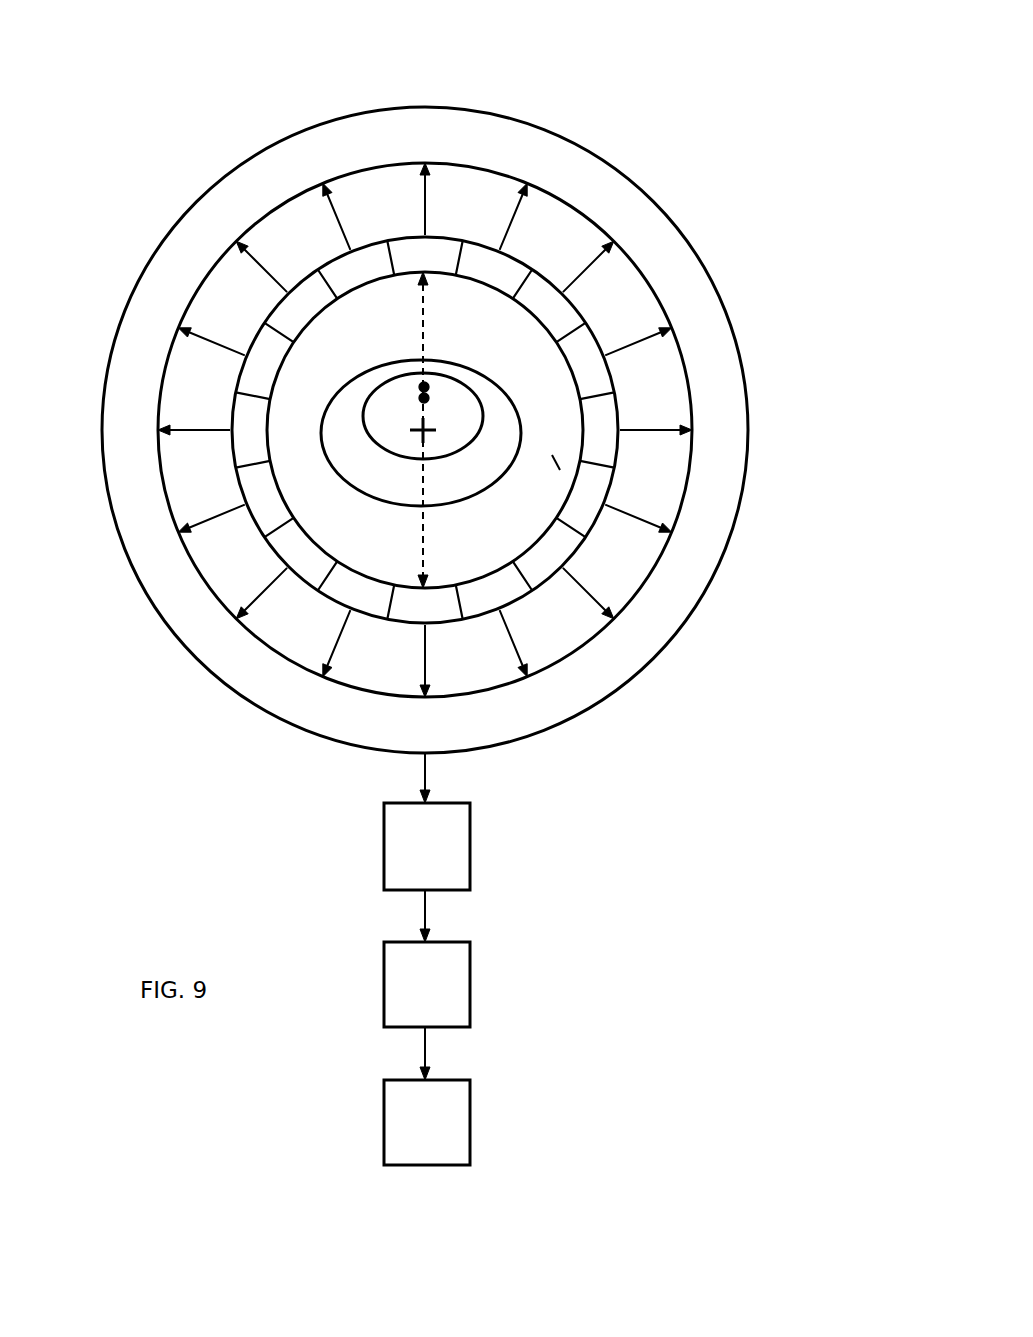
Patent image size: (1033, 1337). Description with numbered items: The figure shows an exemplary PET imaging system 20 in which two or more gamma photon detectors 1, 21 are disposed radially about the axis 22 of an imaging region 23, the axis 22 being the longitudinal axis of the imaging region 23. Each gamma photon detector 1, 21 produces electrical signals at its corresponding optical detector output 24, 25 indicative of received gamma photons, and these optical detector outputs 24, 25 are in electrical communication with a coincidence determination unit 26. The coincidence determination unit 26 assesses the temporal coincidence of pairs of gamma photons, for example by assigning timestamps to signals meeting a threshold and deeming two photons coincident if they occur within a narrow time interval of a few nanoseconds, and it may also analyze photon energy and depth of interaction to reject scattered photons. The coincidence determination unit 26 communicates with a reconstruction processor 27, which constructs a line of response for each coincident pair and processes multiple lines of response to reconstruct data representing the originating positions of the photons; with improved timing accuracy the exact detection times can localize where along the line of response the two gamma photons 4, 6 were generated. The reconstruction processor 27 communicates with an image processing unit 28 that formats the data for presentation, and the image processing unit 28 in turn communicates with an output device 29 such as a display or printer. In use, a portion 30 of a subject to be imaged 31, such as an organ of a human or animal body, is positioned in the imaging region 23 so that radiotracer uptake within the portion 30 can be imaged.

The gamma photon detector 1 is at (428, 253).
The gamma photon 4 is at (410, 388).
The gamma photon 6 is at (437, 403).
The PET imaging system 20 is at (785, 385).
The gamma photon detector 21 is at (417, 610).
The axis 22 is at (425, 432).
The imaging region 23 is at (552, 455).
The optical detector output 24 is at (428, 190).
The optical detector output 25 is at (425, 540).
The coincidence determination unit 26 is at (680, 265).
The reconstruction processor 27 is at (460, 877).
The image processing unit 28 is at (457, 1018).
The output device 29 is at (467, 1142).
The portion of a subject to be imaged 30 is at (455, 375).
The subject to be imaged 31 is at (493, 377).